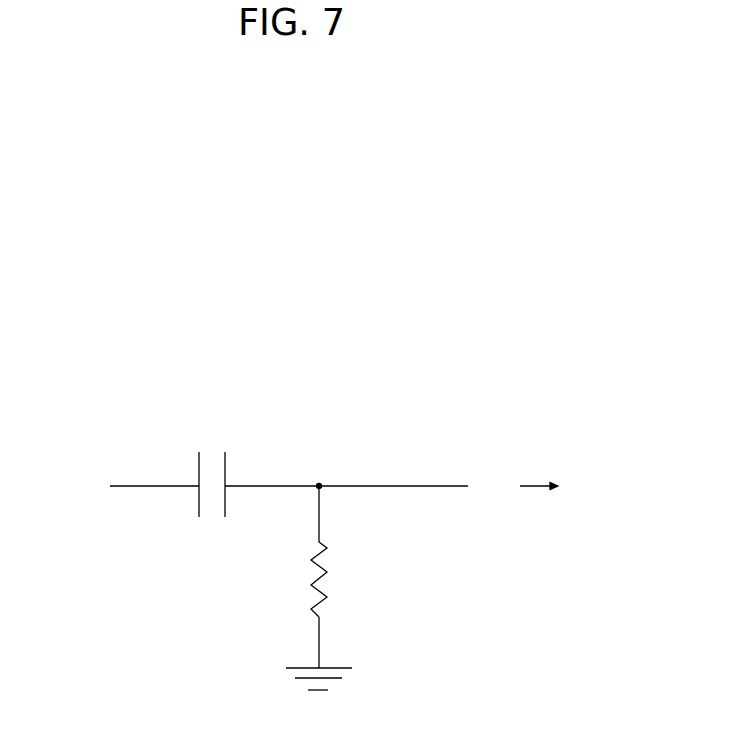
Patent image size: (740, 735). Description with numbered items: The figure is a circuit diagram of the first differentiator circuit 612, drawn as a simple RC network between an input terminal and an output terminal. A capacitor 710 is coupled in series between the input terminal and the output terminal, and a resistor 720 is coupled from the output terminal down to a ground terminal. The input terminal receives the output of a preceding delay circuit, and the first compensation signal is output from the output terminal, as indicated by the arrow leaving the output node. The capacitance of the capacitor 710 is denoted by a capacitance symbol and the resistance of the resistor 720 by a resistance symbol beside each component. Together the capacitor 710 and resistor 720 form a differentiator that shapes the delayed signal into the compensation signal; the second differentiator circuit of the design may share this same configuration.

The first differentiator circuit 612 is at (449, 366).
The capacitor 710 is at (227, 477).
The resistor 720 is at (310, 582).